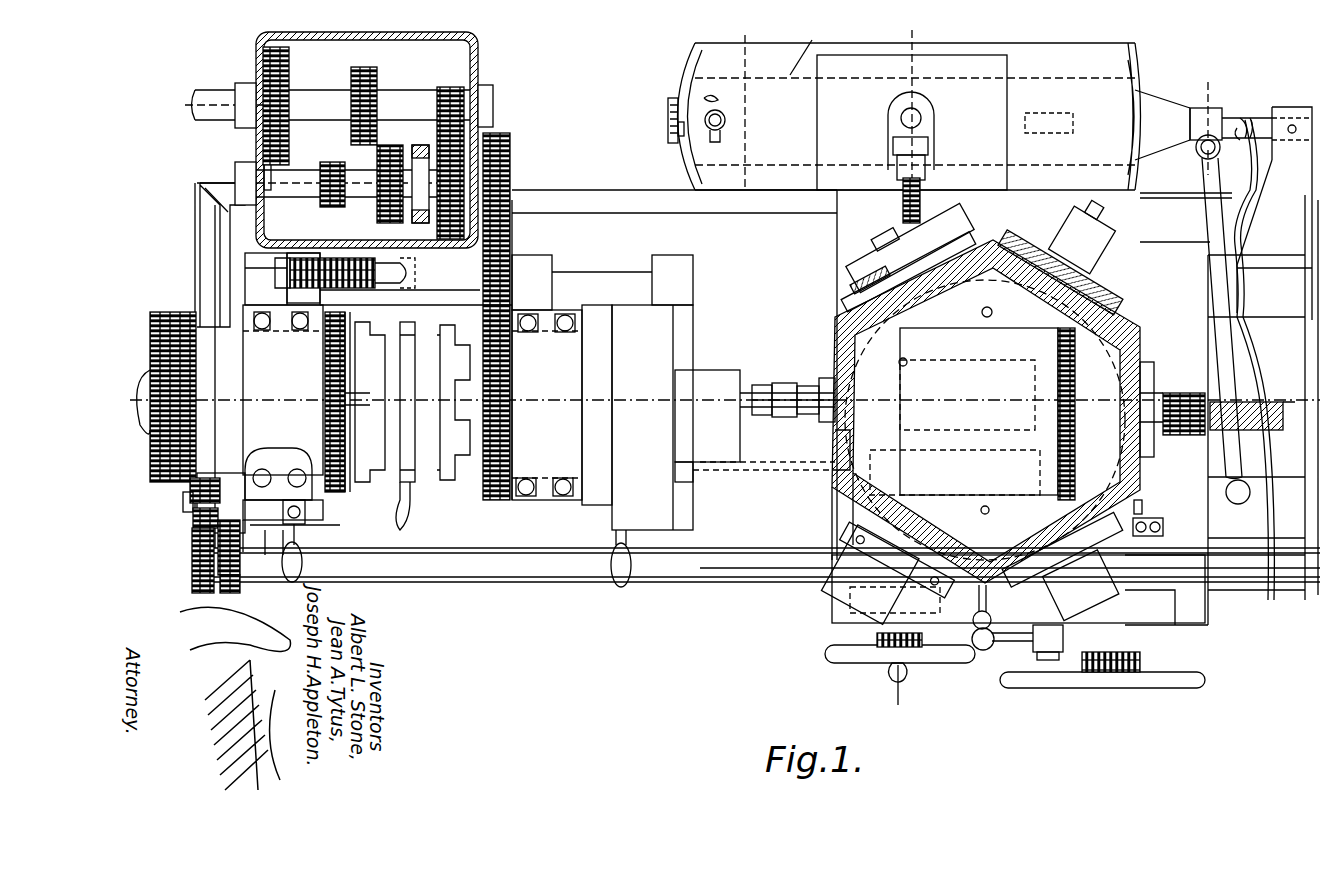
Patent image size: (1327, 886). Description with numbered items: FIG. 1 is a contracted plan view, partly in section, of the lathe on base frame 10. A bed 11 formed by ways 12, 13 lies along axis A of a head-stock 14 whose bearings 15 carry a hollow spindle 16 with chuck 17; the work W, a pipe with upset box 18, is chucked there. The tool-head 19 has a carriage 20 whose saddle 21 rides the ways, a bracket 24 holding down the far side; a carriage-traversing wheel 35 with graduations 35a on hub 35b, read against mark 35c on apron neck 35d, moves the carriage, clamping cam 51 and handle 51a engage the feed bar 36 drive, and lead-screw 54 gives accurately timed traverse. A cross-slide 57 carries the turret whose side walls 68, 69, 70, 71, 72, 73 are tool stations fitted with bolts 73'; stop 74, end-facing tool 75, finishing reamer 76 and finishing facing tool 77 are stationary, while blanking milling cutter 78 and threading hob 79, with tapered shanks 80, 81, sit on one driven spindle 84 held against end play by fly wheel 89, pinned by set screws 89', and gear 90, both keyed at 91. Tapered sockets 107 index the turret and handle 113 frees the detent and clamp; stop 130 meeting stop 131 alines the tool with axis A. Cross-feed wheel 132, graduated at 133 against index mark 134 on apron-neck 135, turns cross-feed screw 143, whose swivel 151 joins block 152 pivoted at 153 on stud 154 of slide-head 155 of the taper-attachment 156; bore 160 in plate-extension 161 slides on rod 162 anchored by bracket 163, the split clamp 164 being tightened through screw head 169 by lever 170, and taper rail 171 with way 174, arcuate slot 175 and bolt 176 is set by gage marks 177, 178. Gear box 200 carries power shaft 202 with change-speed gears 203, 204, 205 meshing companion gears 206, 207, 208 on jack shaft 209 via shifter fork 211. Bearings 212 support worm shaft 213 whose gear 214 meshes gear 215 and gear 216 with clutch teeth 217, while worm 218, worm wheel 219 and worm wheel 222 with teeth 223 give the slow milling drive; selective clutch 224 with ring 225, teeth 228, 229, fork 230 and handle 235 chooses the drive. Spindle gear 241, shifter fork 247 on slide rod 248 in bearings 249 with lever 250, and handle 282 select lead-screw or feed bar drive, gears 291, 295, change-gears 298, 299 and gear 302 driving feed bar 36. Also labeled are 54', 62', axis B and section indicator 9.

The bed 11 is at (694, 298).
The way 12 is at (1295, 560).
The way 13 is at (1276, 300).
The head-stock 14 is at (234, 304).
The bearings 15 is at (545, 488).
The work-taking spindle 16 is at (593, 490).
The chuck 17 is at (693, 331).
The upset end or box 18 is at (702, 385).
The tool-head 19 is at (818, 500).
The carriage 20 is at (820, 520).
The saddle 21 is at (1195, 525).
The bracket 24 is at (746, 50).
The carriage-traversing wheel 35 is at (1195, 690).
The graduations 35a is at (1117, 672).
The wheel-hub 35b is at (1108, 672).
The indicator mark 35c is at (1088, 672).
The apron neck 35d is at (1083, 672).
The feed bar 36 is at (588, 568).
The clamping cam 51 is at (1046, 655).
The handle 51a is at (1055, 663).
The lead-screw 54 is at (1247, 395).
The shaft 54' is at (764, 448).
The cross-slide 57 is at (1128, 312).
The wall 62' is at (816, 460).
The side wall (tool station) 68 is at (865, 300).
The side wall (tool station) 69 is at (1120, 300).
The side wall (tool station) 70 is at (1128, 340).
The side wall (tool station) 71 is at (992, 655).
The side wall (tool station) 72 is at (826, 596).
The side wall (tool station) 73 is at (962, 411).
The bolts 73' is at (977, 408).
The stop 74 is at (850, 261).
The end-facing tool 75 is at (826, 608).
The finishing reamer 76 is at (1108, 596).
The finishing facing tool 77 is at (1116, 254).
The blanking milling cutter 78 is at (780, 418).
The threading mill or hob 79 is at (1178, 386).
The tapered shank 80 is at (822, 450).
The tapered shank 81 is at (1155, 435).
The spindle 84 is at (1138, 360).
The fly wheel or inertia mass 89 is at (979, 395).
The set screws 89' is at (955, 472).
The gear 90 is at (1058, 330).
The key 91 is at (932, 418).
The tapered sockets 107 is at (987, 316).
The operating handle 113 is at (968, 680).
The stop 130 is at (1140, 504).
The stop 131 is at (1146, 516).
The cross-feed wheel 132 is at (832, 650).
The graduations 133 is at (893, 647).
The index mark 134 is at (912, 660).
The apron-neck 135 is at (926, 647).
The cross-feed screw 143 is at (920, 210).
The swivel connection 151 is at (926, 170).
The block 152 is at (934, 140).
The pivot 153 is at (935, 125).
The vertical stud 154 is at (922, 118).
The slide-head 155 is at (962, 65).
The taper-attachment 156 is at (664, 46).
The bore 160 is at (1065, 118).
The plate-extension 161 is at (1150, 106).
The rod 162 is at (1292, 106).
The bracket 163 is at (1247, 116).
The split ring or clamp 164 is at (1216, 112).
The head 169 is at (1220, 152).
The extension lever 170 is at (1222, 292).
The taper adjustment plate or rail 171 is at (798, 52).
The way 174 is at (800, 50).
The arcuate slot 175 is at (720, 104).
The clamping bolt 176 is at (726, 122).
The gage mark 177 is at (668, 108).
The gage mark 178 is at (670, 145).
The gear box 200 is at (486, 35).
The power shaft 202 is at (212, 95).
The change-speed gear 203 is at (285, 73).
The change-speed gear 204 is at (353, 74).
The change-speed gear 205 is at (450, 90).
The companion gear 206 is at (336, 163).
The companion gear 207 is at (379, 213).
The companion gear 208 is at (500, 136).
The jack shaft 209 is at (280, 192).
The shifter fork 211 is at (415, 220).
The bearings 212 is at (530, 275).
The worm shaft 213 is at (470, 285).
The gear 214 is at (540, 262).
The gear 215 is at (510, 162).
The gear 216 is at (506, 385).
The side clutch teeth 217 is at (462, 475).
The worm 218 is at (378, 288).
The worm wheel 219 is at (412, 276).
The worm wheel 222 is at (326, 380).
The side clutch teeth 223 is at (368, 410).
The selective clutch 224 is at (410, 530).
The clutch ring 225 is at (440, 480).
The clutch teeth 228 is at (456, 526).
The clutch teeth 229 is at (368, 430).
The shifting fork 230 is at (412, 540).
The shifting handle 235 is at (418, 548).
The wide face gear 241 is at (190, 492).
The shifter fork 247 is at (215, 478).
The slide rod 248 is at (338, 510).
The bearings 249 is at (302, 468).
The shift lever 250 is at (298, 538).
The manipulating handle 282 is at (628, 570).
The gear 291 is at (185, 505).
The gear 295 is at (222, 548).
The change-gear 298 is at (196, 515).
The change-gear 299 is at (200, 540).
The gear 302 is at (225, 582).
The axis A— A is at (712, 405).
The axis B is at (746, 415).
The work W is at (152, 320).
The section line 9 is at (886, 34).
The base frame 10 is at (1196, 84).